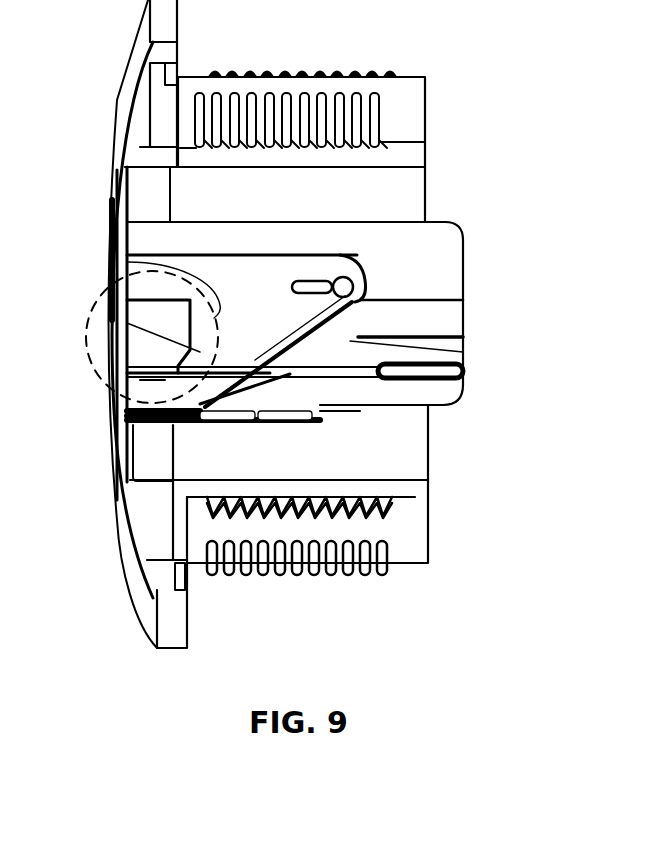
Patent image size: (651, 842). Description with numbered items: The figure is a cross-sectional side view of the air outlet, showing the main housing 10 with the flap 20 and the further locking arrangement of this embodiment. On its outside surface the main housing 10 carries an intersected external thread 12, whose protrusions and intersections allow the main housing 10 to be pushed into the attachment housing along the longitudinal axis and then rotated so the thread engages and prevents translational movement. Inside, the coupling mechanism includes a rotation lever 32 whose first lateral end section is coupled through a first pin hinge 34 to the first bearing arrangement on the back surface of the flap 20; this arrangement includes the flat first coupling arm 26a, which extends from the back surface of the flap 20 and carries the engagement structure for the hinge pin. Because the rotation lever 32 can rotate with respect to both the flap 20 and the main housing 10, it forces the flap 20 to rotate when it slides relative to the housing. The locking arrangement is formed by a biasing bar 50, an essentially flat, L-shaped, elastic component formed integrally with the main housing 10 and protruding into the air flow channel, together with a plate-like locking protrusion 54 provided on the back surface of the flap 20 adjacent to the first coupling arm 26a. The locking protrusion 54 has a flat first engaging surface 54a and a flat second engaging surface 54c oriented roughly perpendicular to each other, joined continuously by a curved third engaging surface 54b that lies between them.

The main housing 10 is at (407, 527).
The intersected external thread 12 is at (302, 588).
The flap 20 is at (95, 350).
The first coupling arm 26a is at (302, 270).
The rotation lever 32 is at (462, 350).
The first pin hinge 34 is at (376, 269).
The biasing bar 50 is at (363, 380).
The locking protrusion 54 is at (108, 388).
The first engaging surface 54a is at (150, 408).
The third engaging surface 54b is at (207, 358).
The second engaging surface 54c is at (150, 283).